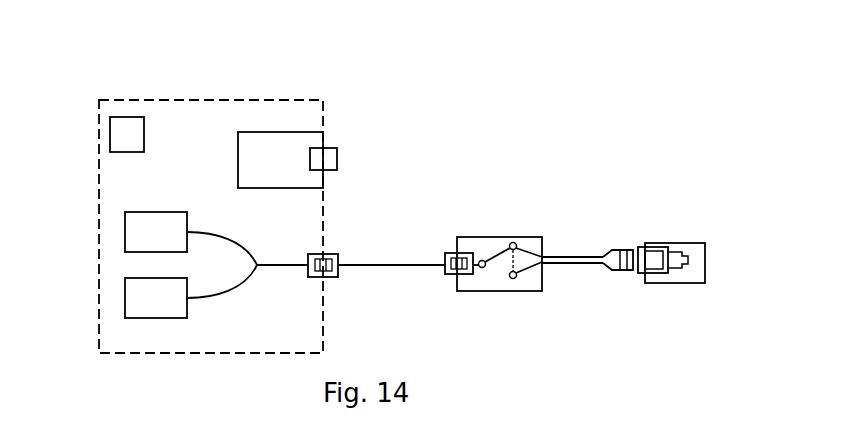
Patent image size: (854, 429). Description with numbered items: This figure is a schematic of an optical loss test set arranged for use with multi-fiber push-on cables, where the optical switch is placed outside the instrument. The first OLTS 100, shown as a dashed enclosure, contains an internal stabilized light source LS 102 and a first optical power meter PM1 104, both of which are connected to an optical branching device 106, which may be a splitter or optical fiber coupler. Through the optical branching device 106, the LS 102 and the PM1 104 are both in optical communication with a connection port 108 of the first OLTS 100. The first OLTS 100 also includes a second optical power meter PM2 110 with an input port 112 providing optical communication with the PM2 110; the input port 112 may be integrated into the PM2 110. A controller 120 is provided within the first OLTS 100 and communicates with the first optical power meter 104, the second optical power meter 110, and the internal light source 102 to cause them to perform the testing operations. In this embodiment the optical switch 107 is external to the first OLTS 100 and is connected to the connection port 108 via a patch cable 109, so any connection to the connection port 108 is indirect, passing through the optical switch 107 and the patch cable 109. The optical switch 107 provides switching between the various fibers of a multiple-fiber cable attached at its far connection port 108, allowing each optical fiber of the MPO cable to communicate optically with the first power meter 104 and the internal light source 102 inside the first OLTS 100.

The first OLTS 100 is at (270, 98).
The controller 120 is at (120, 135).
The second optical power meter PM2 110 is at (250, 147).
The input port 112 is at (330, 160).
The first optical power meter PM1 104 is at (140, 225).
The stabilized light source LS 102 is at (140, 312).
The optical branching device 106 is at (223, 242).
The connection port 108 is at (320, 278).
The patch cable 109 is at (367, 265).
The optical switch 107 is at (583, 218).